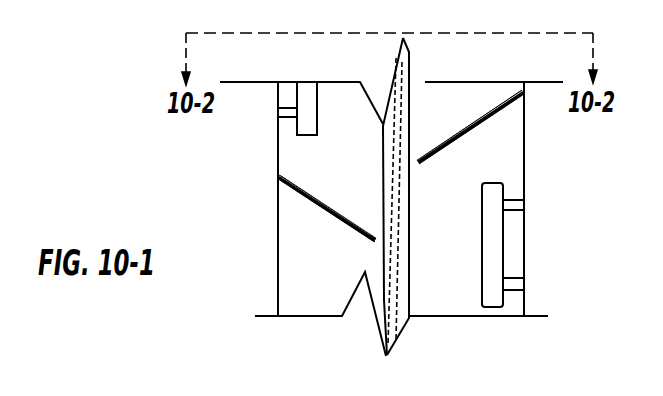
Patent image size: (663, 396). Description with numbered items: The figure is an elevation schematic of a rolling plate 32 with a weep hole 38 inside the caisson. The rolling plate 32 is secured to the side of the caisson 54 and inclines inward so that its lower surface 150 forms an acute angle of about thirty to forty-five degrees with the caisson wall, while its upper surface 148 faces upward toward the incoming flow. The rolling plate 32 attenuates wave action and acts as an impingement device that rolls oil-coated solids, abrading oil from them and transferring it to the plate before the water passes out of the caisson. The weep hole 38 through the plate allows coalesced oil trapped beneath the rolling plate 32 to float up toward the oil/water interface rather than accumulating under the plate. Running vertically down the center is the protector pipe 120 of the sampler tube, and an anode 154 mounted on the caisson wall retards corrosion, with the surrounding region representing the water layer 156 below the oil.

The rolling plate 32 is at (375, 242).
The weep hole 38 is at (280, 177).
The side of the caisson 54 is at (524, 247).
The protector pipe 120 is at (409, 243).
The upper surface 148 is at (317, 203).
The lower surface 150 is at (338, 221).
The anode 154 is at (297, 133).
The water layer 156 is at (503, 267).